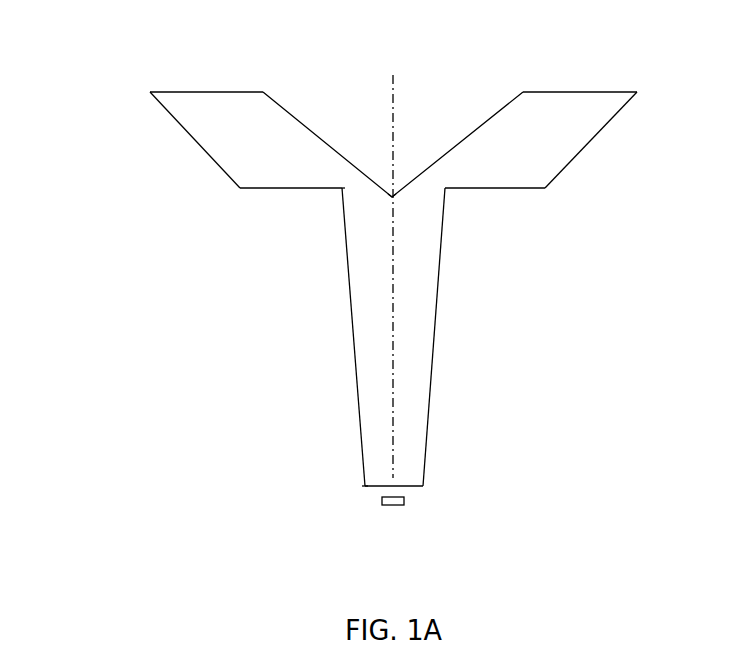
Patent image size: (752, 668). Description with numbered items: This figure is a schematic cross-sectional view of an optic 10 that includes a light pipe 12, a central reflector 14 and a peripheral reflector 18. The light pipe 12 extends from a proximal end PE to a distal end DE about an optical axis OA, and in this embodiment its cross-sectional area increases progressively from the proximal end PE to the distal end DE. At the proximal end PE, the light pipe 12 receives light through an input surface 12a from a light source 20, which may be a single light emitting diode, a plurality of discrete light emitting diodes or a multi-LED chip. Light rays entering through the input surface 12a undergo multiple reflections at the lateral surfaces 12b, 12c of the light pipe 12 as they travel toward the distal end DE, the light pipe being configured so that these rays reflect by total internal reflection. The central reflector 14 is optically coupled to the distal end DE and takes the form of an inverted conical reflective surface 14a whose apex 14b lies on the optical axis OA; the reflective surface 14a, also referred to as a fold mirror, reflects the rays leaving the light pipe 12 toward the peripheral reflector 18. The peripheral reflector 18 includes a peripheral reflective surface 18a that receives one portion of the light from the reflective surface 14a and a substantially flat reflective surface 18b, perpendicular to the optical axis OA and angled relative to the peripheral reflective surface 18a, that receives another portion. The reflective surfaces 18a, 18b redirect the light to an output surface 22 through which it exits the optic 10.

The optic 10 is at (110, 279).
The light pipe 12 is at (351, 348).
The input surface 12a is at (413, 489).
The lateral surface 12b is at (358, 414).
The lateral surface 12c is at (429, 414).
The central reflector 14 is at (497, 107).
The inverted conical reflective surface 14a is at (305, 126).
The apex 14b is at (399, 204).
The peripheral reflector 18 is at (591, 159).
The peripheral reflective surface 18a is at (200, 147).
The reflective surface 18b is at (265, 189).
The light source 20 is at (389, 509).
The output surface 22 is at (199, 90).
The optical axis OA is at (391, 76).
The distal end DE is at (339, 193).
The proximal end PE is at (369, 489).